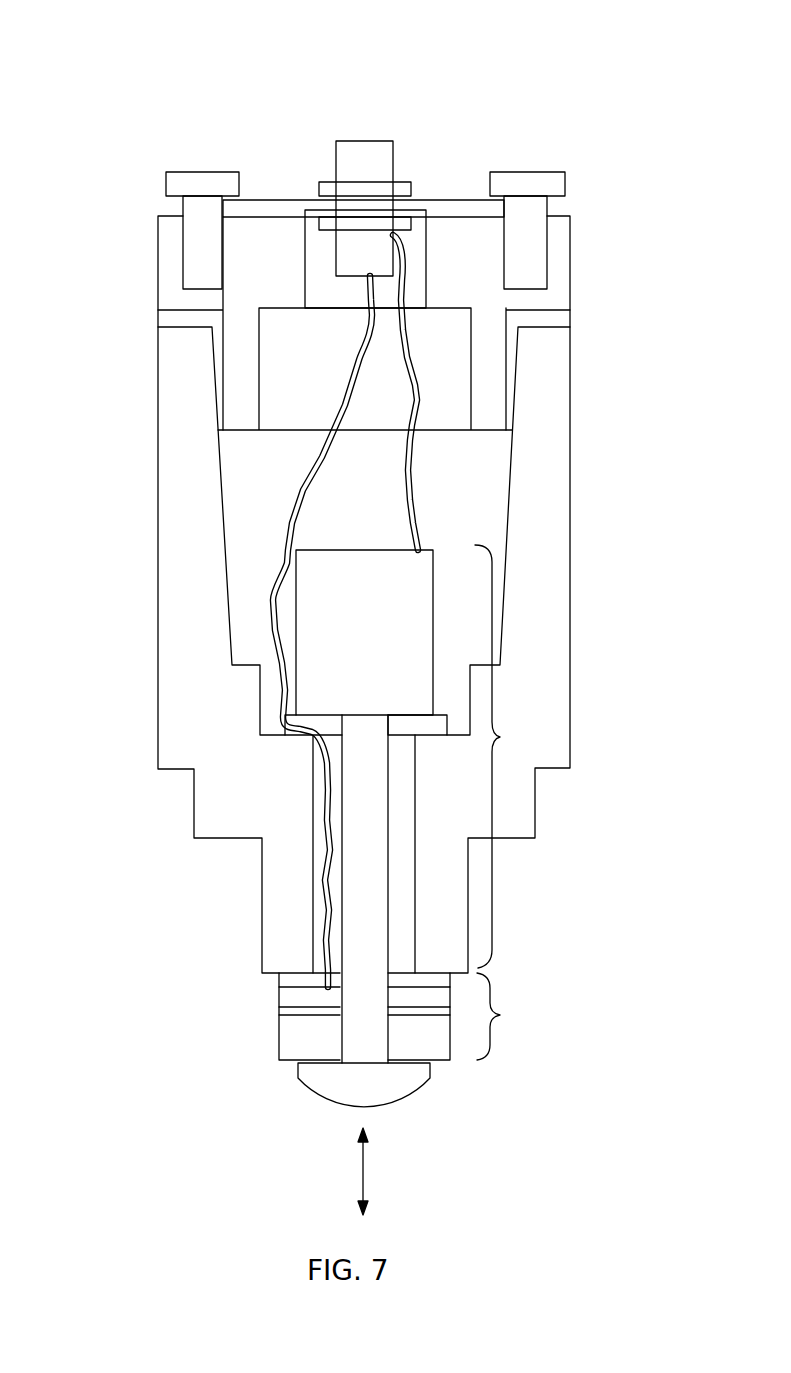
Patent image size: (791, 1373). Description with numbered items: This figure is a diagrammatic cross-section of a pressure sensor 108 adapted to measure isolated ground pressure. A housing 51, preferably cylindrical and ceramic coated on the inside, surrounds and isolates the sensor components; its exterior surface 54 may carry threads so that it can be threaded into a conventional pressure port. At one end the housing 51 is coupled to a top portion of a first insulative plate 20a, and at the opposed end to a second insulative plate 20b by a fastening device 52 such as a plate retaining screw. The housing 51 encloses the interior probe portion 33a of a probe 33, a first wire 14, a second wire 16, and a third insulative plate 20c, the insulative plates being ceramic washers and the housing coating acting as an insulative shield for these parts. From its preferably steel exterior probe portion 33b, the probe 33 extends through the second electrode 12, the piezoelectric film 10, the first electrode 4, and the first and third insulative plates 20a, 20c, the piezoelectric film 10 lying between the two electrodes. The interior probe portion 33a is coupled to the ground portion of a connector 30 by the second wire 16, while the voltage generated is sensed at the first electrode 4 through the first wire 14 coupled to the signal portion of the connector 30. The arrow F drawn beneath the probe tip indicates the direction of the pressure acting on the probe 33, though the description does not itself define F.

The pressure sensor 108 is at (560, 96).
The connector 30 is at (362, 140).
The second insulative plate 20b is at (298, 200).
The fastening device 52 is at (166, 184).
The housing 51 is at (158, 236).
The first wire 14 is at (295, 492).
The second wire 16 is at (420, 498).
The interior probe portion 33a is at (521, 756).
The third insulative plate 20c is at (438, 735).
The exterior surface 54 is at (176, 815).
The first insulative plate 20a is at (278, 978).
The first electrode 4 is at (279, 1000).
The piezoelectric film 10 is at (279, 1012).
The second electrode 12 is at (279, 1045).
The exterior probe portion 33b is at (522, 1016).
The probe 33 is at (430, 1106).
The force direction F is at (365, 1165).